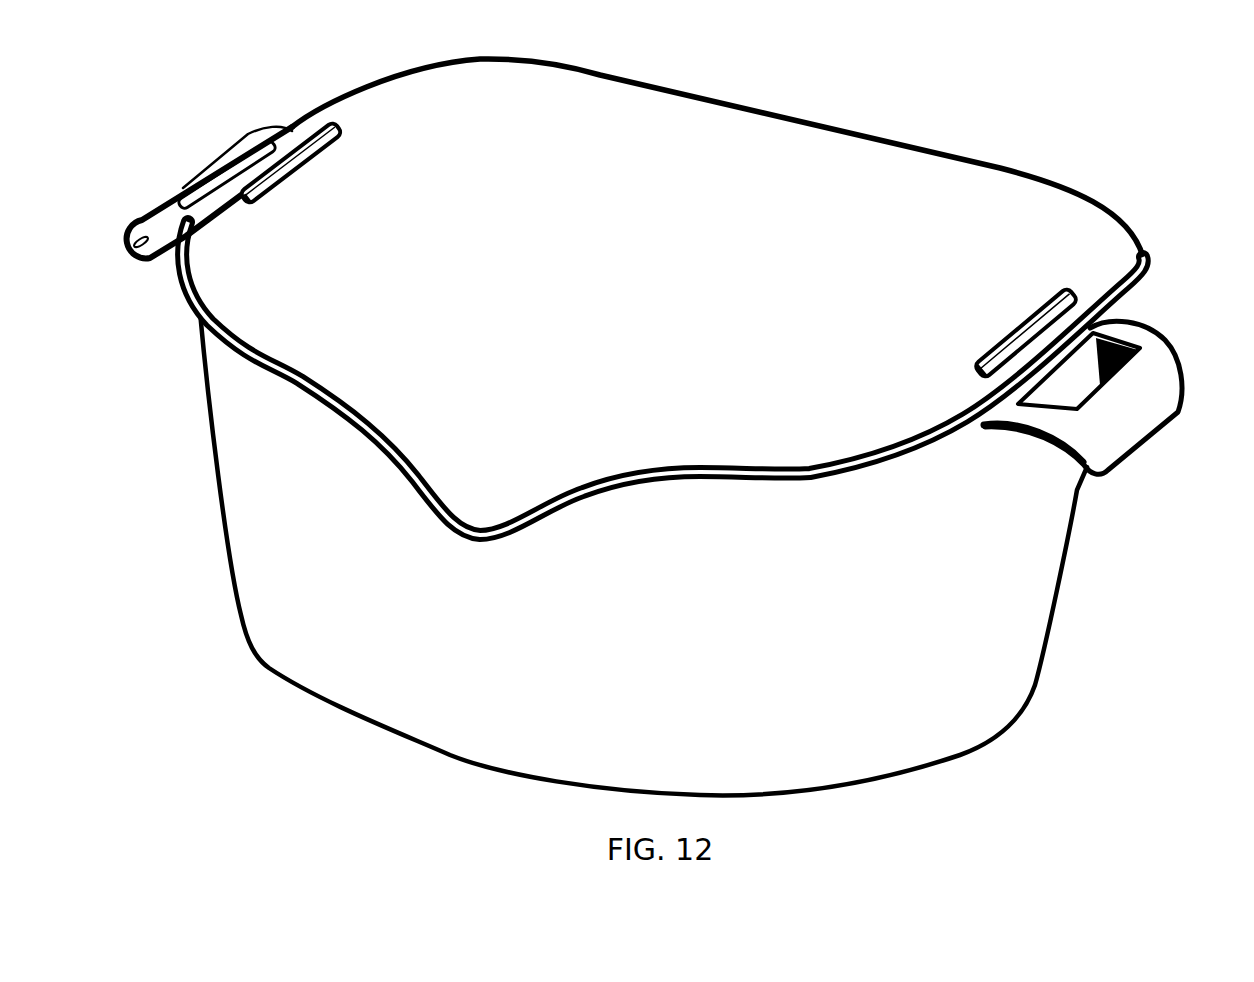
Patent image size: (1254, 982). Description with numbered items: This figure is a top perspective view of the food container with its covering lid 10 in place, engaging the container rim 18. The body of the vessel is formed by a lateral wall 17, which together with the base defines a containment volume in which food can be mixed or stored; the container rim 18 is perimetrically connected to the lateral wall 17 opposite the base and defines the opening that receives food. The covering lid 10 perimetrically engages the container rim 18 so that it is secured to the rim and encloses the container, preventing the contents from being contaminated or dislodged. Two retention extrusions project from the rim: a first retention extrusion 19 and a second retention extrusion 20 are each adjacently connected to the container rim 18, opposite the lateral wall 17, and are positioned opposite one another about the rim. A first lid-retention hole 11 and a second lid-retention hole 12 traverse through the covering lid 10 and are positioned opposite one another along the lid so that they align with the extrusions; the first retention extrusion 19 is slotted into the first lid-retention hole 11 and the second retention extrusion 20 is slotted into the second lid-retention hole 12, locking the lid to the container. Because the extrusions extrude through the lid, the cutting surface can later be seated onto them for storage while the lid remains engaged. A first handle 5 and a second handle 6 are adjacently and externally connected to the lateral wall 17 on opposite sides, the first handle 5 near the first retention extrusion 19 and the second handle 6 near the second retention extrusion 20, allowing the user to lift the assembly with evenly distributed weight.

The first handle 5 is at (175, 217).
The second handle 6 is at (1143, 407).
The covering lid 10 is at (887, 173).
The first lid-retention hole 11 is at (340, 130).
The second lid-retention hole 12 is at (985, 357).
The lateral wall 17 is at (1030, 553).
The container rim 18 is at (627, 493).
The first retention extrusion 19 is at (270, 188).
The second retention extrusion 20 is at (1013, 337).